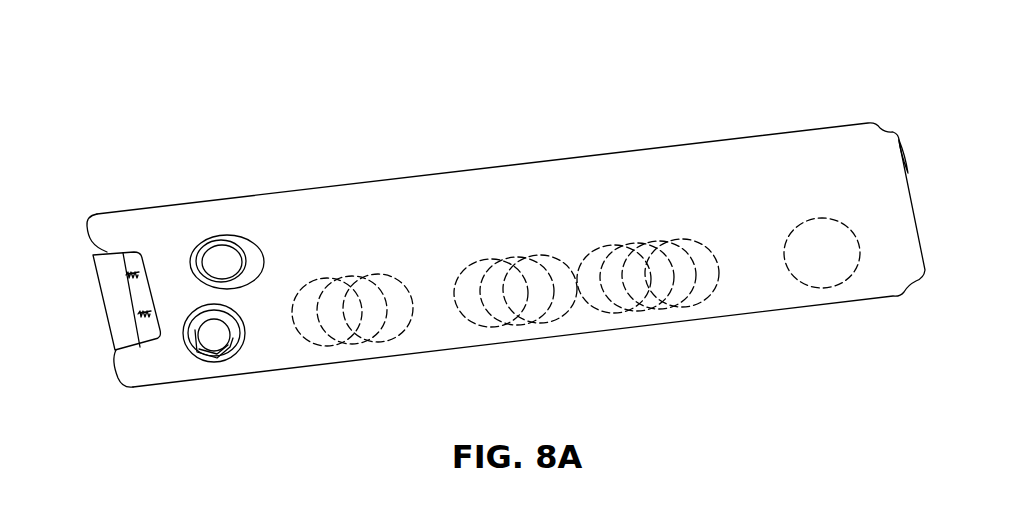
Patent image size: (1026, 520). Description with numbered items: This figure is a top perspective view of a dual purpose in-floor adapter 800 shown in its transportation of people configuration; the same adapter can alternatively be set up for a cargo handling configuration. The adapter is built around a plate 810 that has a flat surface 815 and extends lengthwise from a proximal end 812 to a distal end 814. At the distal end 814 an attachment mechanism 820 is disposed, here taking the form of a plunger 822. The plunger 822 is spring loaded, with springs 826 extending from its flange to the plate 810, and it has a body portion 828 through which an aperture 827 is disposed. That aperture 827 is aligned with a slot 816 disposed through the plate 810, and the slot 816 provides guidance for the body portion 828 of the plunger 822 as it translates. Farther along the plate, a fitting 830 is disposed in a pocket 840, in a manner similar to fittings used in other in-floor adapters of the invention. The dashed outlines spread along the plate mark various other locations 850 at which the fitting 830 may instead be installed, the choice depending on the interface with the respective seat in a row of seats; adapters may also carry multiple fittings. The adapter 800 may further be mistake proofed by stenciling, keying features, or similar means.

The dual purpose in-floor adapter 800 is at (295, 125).
The plate 810 is at (744, 167).
The proximal end 812 is at (899, 140).
The distal end 814 is at (107, 252).
The flat surface 815 is at (497, 210).
The slot 816 is at (260, 263).
The attachment mechanism 820 is at (195, 125).
The plunger 822 is at (118, 298).
The springs 826 is at (110, 252).
The aperture 827 is at (204, 263).
The body portion 828 is at (252, 250).
The fitting 830 is at (218, 358).
The pocket 840 is at (195, 338).
The other locations 850 is at (458, 245).